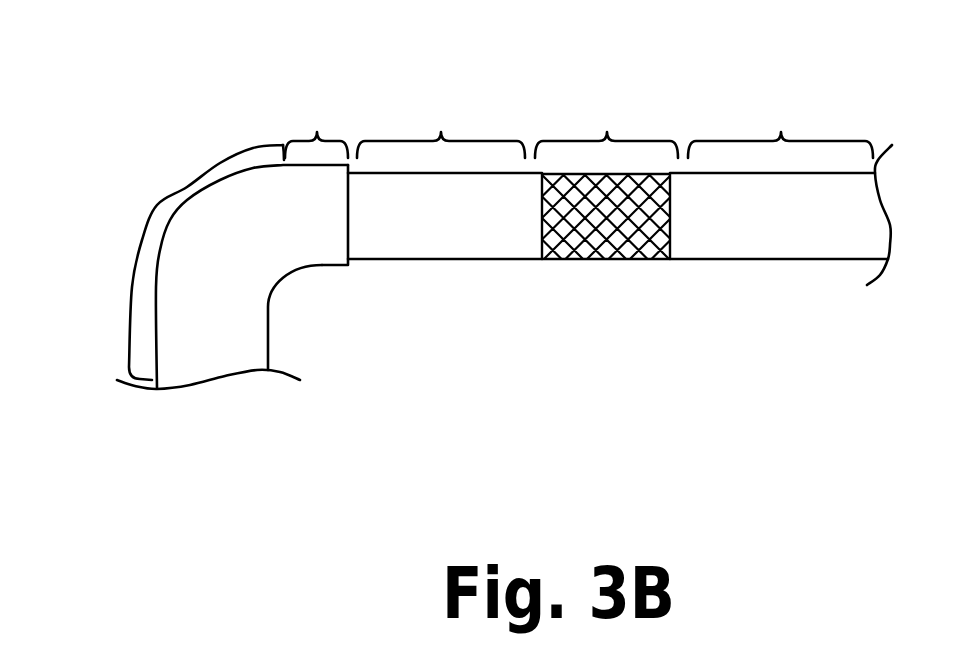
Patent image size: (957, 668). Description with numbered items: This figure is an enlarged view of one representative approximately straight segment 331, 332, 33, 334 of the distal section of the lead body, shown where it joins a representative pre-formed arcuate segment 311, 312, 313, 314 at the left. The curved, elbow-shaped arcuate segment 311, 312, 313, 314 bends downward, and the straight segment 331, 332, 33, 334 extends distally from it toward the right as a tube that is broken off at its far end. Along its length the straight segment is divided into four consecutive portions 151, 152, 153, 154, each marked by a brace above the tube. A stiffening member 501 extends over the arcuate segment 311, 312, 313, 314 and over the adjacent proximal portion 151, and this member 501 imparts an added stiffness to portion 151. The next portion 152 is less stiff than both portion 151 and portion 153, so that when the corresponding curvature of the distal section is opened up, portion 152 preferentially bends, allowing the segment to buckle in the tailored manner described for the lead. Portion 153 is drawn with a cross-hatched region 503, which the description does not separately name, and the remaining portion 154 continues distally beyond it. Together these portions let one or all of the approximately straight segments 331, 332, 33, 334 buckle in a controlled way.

The pre-formed arcuate segment 311 is at (196, 257).
The pre-formed arcuate segment 312 is at (196, 257).
The pre-formed arcuate segment 313 is at (196, 257).
The pre-formed arcuate segment 314 is at (196, 257).
The approximately straight segment 331 is at (588, 180).
The approximately straight segment 332 is at (588, 180).
The approximately straight segment 33 is at (588, 180).
The approximately straight segment 334 is at (588, 180).
The portion 151 is at (316, 130).
The portion 152 is at (445, 181).
The portion 153 is at (607, 223).
The portion 154 is at (781, 194).
The stiffening member 501 is at (300, 255).
The braided reinforcement 503 is at (612, 262).